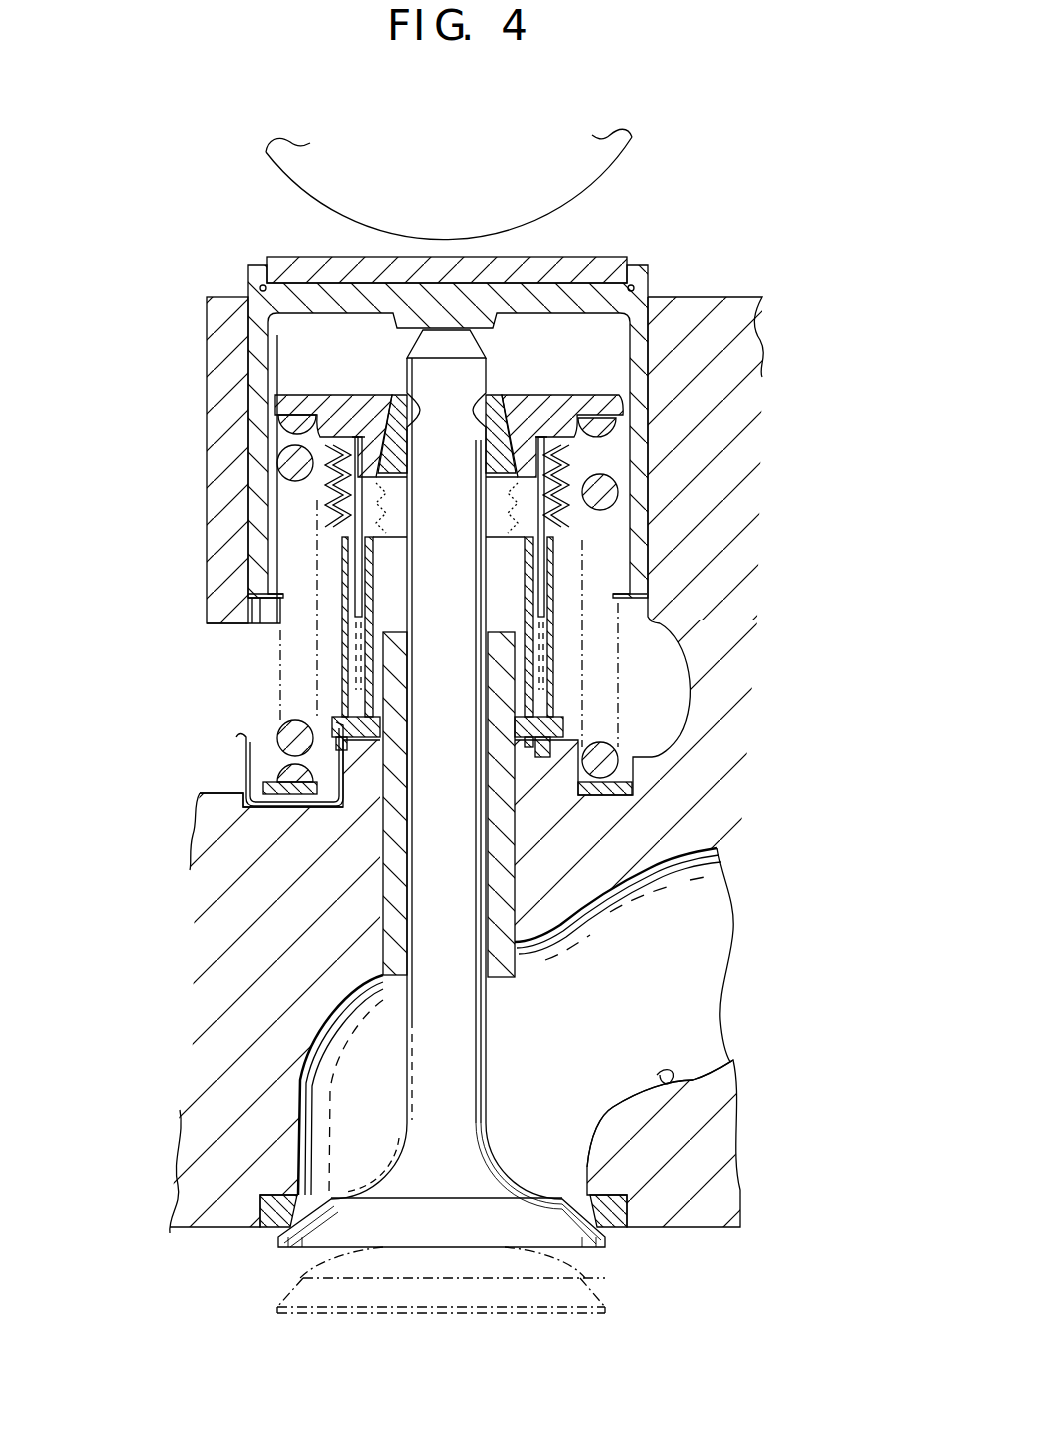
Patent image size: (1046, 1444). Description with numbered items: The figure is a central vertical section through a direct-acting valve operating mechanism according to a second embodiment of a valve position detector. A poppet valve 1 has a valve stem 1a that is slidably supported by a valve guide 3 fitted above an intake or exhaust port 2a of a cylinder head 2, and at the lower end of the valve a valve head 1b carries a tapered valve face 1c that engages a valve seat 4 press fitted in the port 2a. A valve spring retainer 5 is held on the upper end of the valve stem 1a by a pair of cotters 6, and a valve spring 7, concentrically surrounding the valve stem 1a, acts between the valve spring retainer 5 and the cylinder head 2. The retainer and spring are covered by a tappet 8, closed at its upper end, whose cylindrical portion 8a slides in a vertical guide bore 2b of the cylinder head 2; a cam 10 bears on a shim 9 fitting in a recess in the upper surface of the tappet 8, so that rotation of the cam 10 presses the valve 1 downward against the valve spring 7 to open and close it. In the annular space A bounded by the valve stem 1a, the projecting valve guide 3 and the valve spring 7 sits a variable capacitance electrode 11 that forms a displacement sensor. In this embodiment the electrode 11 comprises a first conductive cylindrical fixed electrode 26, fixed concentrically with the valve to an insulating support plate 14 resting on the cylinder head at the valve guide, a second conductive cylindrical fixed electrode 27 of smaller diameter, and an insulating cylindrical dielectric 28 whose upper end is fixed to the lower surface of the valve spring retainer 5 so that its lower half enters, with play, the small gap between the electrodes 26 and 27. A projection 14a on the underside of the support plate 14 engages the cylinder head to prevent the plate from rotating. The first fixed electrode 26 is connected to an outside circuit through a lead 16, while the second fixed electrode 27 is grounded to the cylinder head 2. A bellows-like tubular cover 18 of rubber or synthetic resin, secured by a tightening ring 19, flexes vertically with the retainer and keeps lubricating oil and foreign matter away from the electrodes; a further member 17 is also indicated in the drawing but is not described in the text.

The poppet valve 1 is at (395, 832).
The valve stem 1a is at (478, 1023).
The valve head 1b is at (278, 1326).
The valve face 1c is at (275, 1227).
The cylinder head 2 is at (702, 1210).
The intake or exhaust port 2a is at (660, 1077).
The vertical guide bore 2b is at (258, 364).
The valve guide 3 is at (512, 918).
The valve seat 4 is at (272, 1207).
The valve spring retainer 5 is at (548, 395).
The cotters 6 is at (392, 395).
The valve spring 7 is at (620, 492).
The tappet 8 is at (680, 273).
The cylindrical portion 8a is at (666, 360).
The shim 9 is at (583, 257).
The cam 10 is at (612, 170).
The variable capacitance electrode 11 is at (480, 597).
The insulating support plate 14 is at (562, 722).
The projection 14a is at (550, 742).
The lead 16 is at (234, 740).
The seat surface 17 is at (208, 793).
The bellows-like tubular cover 18 is at (333, 513).
The tightening ring 19 is at (340, 547).
The first fixed electrode 26 is at (336, 640).
The second fixed electrode 27 is at (368, 700).
The dielectric 28 is at (324, 486).
The annular space A is at (613, 640).